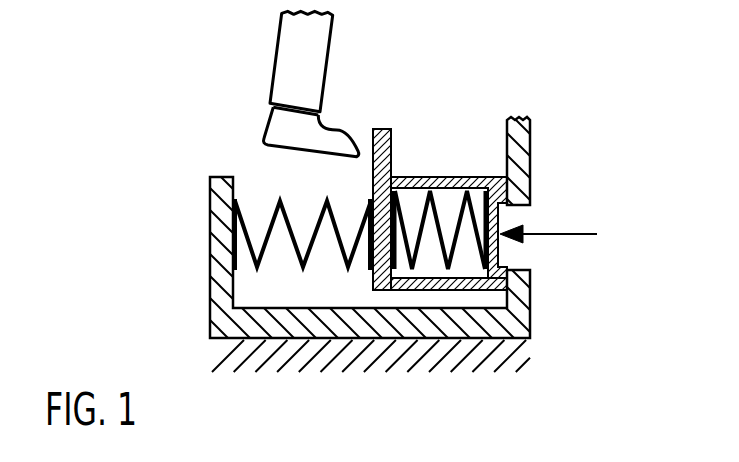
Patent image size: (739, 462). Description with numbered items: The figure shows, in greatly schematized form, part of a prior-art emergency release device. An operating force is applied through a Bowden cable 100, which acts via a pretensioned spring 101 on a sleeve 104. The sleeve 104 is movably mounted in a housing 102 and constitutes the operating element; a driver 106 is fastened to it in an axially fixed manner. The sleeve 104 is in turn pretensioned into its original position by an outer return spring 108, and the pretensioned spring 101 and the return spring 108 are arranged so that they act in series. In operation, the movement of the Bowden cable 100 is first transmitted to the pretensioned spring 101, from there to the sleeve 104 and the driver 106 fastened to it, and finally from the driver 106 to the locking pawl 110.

The Bowden cable 100 is at (578, 230).
The pretensioned spring 101 is at (428, 207).
The housing 102 is at (527, 290).
The sleeve 104 is at (447, 285).
The driver 106 is at (383, 138).
The outer return spring 108 is at (247, 245).
The locking pawl 110 is at (285, 52).